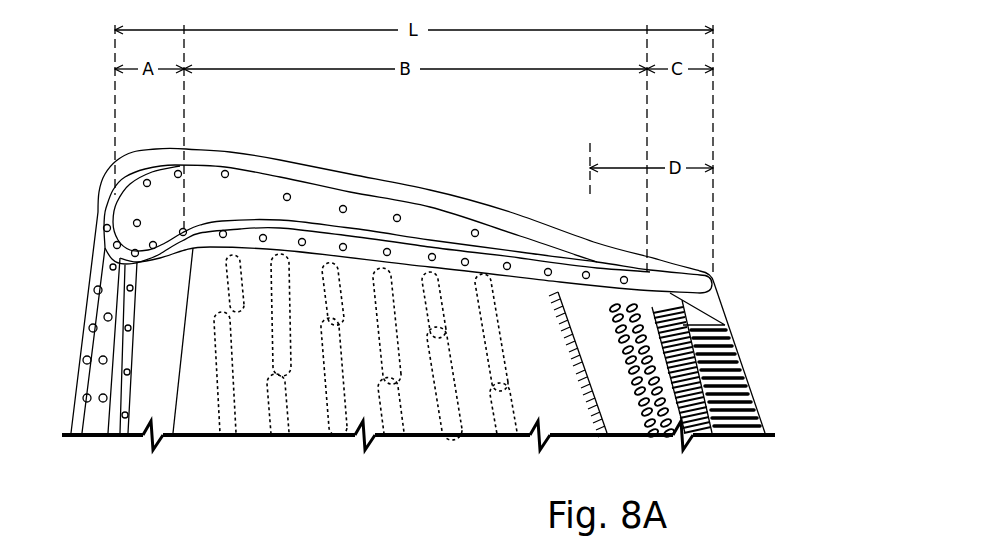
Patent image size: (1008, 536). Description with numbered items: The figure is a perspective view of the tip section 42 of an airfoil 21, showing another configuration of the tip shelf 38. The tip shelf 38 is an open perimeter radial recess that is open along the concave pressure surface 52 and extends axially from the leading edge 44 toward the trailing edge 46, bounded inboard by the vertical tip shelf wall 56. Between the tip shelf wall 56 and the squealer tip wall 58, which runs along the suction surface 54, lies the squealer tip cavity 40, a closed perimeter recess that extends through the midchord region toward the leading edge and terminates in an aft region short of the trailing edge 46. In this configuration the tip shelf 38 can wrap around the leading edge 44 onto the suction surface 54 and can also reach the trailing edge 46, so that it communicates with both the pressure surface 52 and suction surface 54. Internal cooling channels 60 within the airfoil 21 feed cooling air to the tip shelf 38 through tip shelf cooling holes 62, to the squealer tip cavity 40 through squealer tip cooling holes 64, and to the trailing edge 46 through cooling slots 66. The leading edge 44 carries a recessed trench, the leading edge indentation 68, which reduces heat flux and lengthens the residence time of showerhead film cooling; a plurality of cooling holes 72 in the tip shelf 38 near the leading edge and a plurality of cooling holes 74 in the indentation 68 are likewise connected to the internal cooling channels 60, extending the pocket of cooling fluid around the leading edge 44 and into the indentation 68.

The airfoil 21 is at (86, 166).
The tip shelf 38 is at (603, 272).
The squealer tip cavity 40 is at (307, 203).
The tip section 42 is at (60, 160).
The leading edge 44 is at (110, 303).
The trailing edge 46 is at (722, 303).
The pressure surface 52 is at (417, 425).
The suction surface 54 is at (446, 168).
The tip shelf wall 56 is at (246, 217).
The squealer tip wall 58 is at (368, 183).
The internal cooling channels 60 is at (193, 407).
The tip shelf cooling holes 62 is at (182, 229).
The squealer tip cooling holes 64 is at (225, 171).
The trailing edge cooling slots 66 is at (740, 420).
The leading edge indentation 68 is at (115, 263).
The cooling holes 72 is at (104, 228).
The cooling holes 74 is at (88, 395).